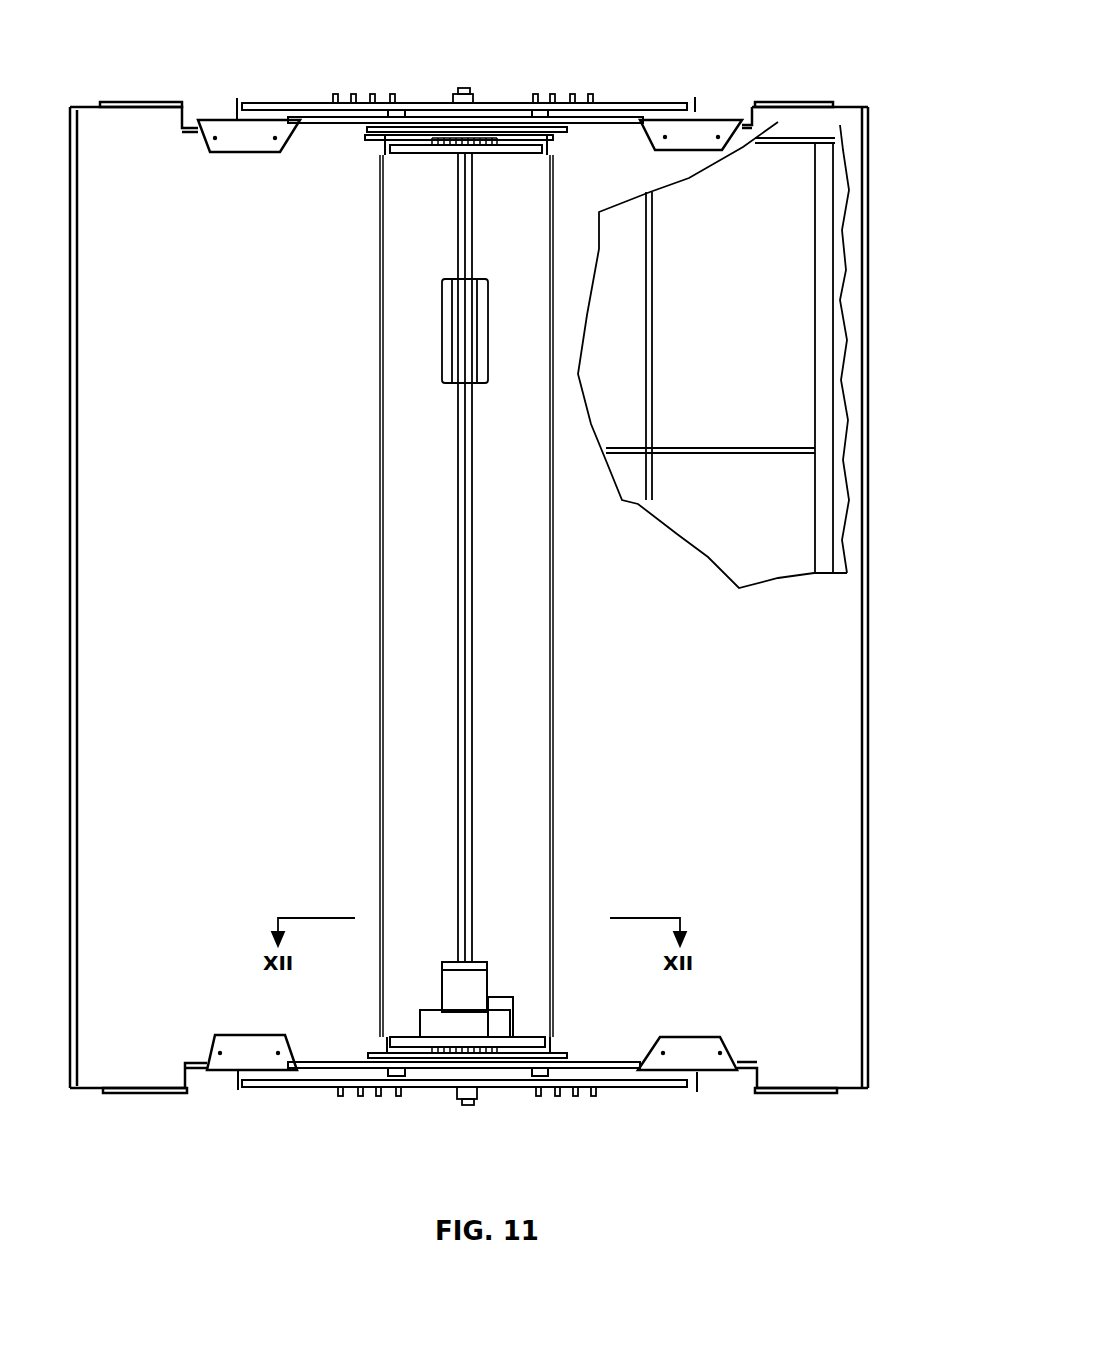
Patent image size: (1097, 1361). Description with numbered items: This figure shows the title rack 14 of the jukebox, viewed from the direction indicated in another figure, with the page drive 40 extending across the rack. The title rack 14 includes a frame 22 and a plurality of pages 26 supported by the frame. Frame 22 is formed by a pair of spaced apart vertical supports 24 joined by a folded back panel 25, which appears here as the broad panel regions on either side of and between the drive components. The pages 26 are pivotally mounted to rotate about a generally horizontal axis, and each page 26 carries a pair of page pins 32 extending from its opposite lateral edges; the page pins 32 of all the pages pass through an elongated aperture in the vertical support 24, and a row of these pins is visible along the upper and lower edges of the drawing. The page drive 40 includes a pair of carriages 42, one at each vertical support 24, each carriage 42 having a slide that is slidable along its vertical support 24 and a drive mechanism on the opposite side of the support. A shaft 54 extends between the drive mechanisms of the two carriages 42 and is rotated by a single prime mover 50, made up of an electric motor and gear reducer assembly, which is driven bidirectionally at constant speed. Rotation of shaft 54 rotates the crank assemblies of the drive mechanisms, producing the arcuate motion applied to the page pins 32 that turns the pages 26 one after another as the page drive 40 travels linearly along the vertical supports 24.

The title rack 14 is at (797, 98).
The frame 22 is at (118, 105).
The vertical support 24 is at (717, 118).
The folded back panel 25 is at (235, 773).
The page 26 is at (815, 323).
The page pin 32 is at (353, 94).
The page drive 40 is at (456, 490).
The carriage 42 is at (505, 103).
The prime mover 50 is at (513, 1007).
The shaft 54 is at (473, 615).